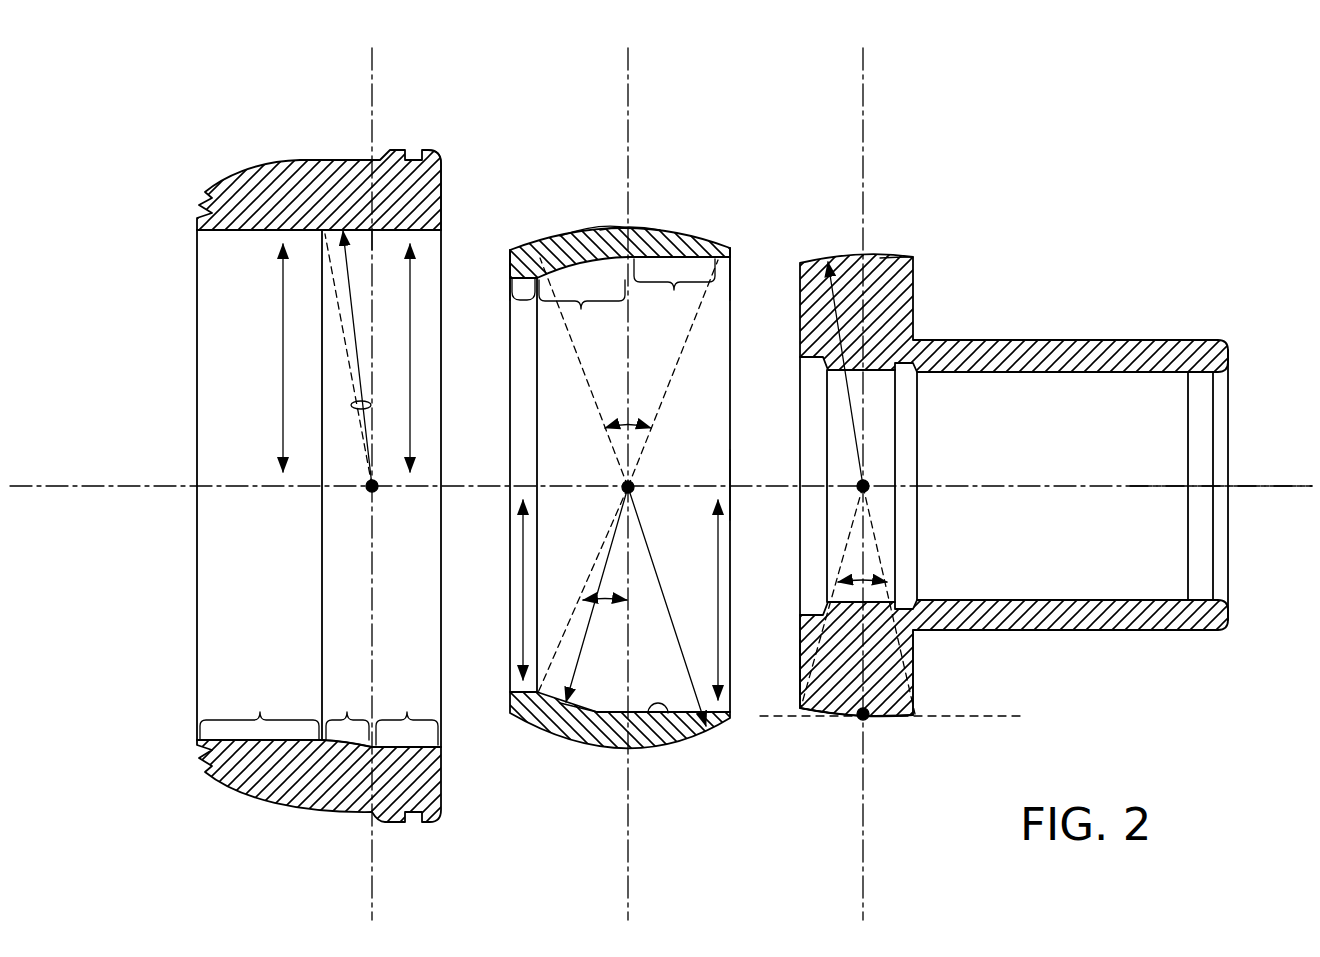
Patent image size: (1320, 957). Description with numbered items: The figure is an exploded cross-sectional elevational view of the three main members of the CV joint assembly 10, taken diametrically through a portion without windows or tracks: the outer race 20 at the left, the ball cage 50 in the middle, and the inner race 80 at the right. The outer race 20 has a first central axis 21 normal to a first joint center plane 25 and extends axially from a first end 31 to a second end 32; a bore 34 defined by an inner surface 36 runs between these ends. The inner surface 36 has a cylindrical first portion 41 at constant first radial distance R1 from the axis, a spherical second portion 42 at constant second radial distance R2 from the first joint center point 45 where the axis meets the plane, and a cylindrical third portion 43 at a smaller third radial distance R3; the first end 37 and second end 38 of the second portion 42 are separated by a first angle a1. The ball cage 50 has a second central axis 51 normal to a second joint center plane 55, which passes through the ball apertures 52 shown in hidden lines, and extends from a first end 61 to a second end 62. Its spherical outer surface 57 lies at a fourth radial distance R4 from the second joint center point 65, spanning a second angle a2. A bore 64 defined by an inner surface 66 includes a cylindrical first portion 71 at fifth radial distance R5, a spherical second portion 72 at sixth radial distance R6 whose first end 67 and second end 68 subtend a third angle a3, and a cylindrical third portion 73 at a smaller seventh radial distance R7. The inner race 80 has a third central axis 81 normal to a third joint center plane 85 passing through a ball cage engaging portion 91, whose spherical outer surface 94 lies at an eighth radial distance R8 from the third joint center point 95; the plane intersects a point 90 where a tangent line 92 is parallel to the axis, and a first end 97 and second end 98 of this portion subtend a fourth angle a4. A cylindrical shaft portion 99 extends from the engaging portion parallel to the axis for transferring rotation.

The CV joint assembly 10 is at (112, 102).
The outer race 20 is at (256, 166).
The first central axis 21 is at (120, 490).
The first joint center plane 25 is at (372, 103).
The first end 31 is at (437, 152).
The second end 32 is at (197, 230).
The bore 34 is at (224, 234).
The inner surface 36 is at (250, 232).
The first end of the second portion 37 is at (375, 247).
The second end of the second portion 38 is at (331, 240).
The first portion 41 is at (406, 715).
The second portion 42 is at (347, 715).
The third portion 43 is at (259, 711).
The first joint center point 45 is at (369, 490).
The ball cage 50 is at (555, 231).
The second central axis 51 is at (732, 486).
The ball apertures 52 is at (686, 252).
The second joint center plane 55 is at (628, 103).
The outer surface 57 is at (582, 240).
The first end 61 is at (731, 250).
The second end 62 is at (510, 278).
The bore 64 is at (586, 703).
The second joint center point 65 is at (625, 490).
The inner surface 66 is at (666, 714).
The first end of the second portion 67 is at (636, 240).
The second end of the second portion 68 is at (510, 252).
The first portion 71 is at (674, 288).
The second portion 72 is at (582, 309).
The third portion 73 is at (522, 300).
The inner race 80 is at (1183, 340).
The third central axis 81 is at (1283, 488).
The third joint center plane 85 is at (863, 103).
The point 90 is at (912, 688).
The ball cage engaging portion 91 is at (808, 717).
The line 92 is at (1022, 716).
The outer surface 94 is at (858, 717).
The third joint center point 95 is at (858, 486).
The first end 97 is at (912, 712).
The second end 98 is at (800, 676).
The shaft portion 99 is at (1060, 343).
The first radial distance R1 is at (412, 340).
The second radial distance R2 is at (355, 378).
The third radial distance R3 is at (283, 322).
The fourth radial distance R4 is at (700, 736).
The fifth radial distance R5 is at (720, 600).
The sixth radial distance R6 is at (590, 668).
The seventh radial distance R7 is at (522, 573).
The eighth radial distance R8 is at (855, 257).
The first angle a1 is at (350, 405).
The second angle a2 is at (603, 426).
The third angle a3 is at (627, 573).
The fourth angle a4 is at (875, 585).